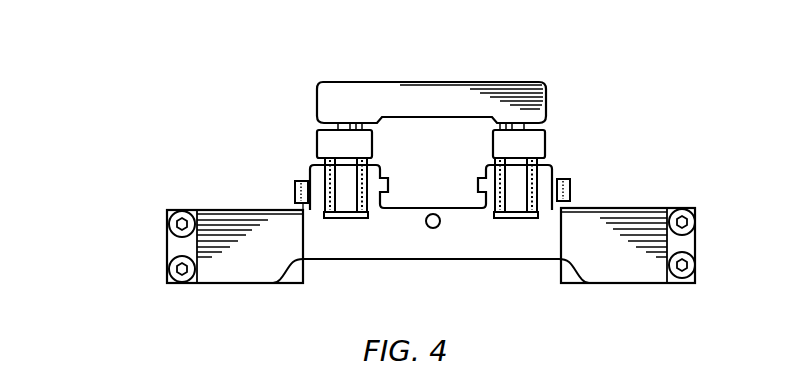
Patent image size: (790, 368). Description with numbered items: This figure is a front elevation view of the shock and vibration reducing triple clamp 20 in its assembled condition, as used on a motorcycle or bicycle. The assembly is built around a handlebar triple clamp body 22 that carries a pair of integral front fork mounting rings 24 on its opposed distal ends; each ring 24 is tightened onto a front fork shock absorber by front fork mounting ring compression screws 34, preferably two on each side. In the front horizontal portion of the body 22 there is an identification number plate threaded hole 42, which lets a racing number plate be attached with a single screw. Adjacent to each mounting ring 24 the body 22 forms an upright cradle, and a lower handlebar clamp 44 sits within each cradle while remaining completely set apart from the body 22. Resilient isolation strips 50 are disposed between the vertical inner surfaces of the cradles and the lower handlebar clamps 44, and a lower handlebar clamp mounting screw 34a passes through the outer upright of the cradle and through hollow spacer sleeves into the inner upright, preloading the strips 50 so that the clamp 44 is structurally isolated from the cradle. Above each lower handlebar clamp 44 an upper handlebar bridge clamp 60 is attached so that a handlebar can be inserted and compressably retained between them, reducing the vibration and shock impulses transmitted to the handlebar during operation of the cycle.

The shock and vibration reducing triple clamp 20 is at (163, 181).
The handlebar triple clamp body 22 is at (397, 260).
The front fork mounting ring 24 is at (257, 283).
The front fork mounting ring compression screw 34 is at (168, 224).
The lower handlebar clamp mounting screw 34a is at (295, 189).
The identification number plate threaded hole 42 is at (437, 227).
The lower handlebar clamp 44 is at (317, 133).
The resilient isolation strip 50 is at (325, 179).
The upper handlebar bridge clamp 60 is at (492, 82).